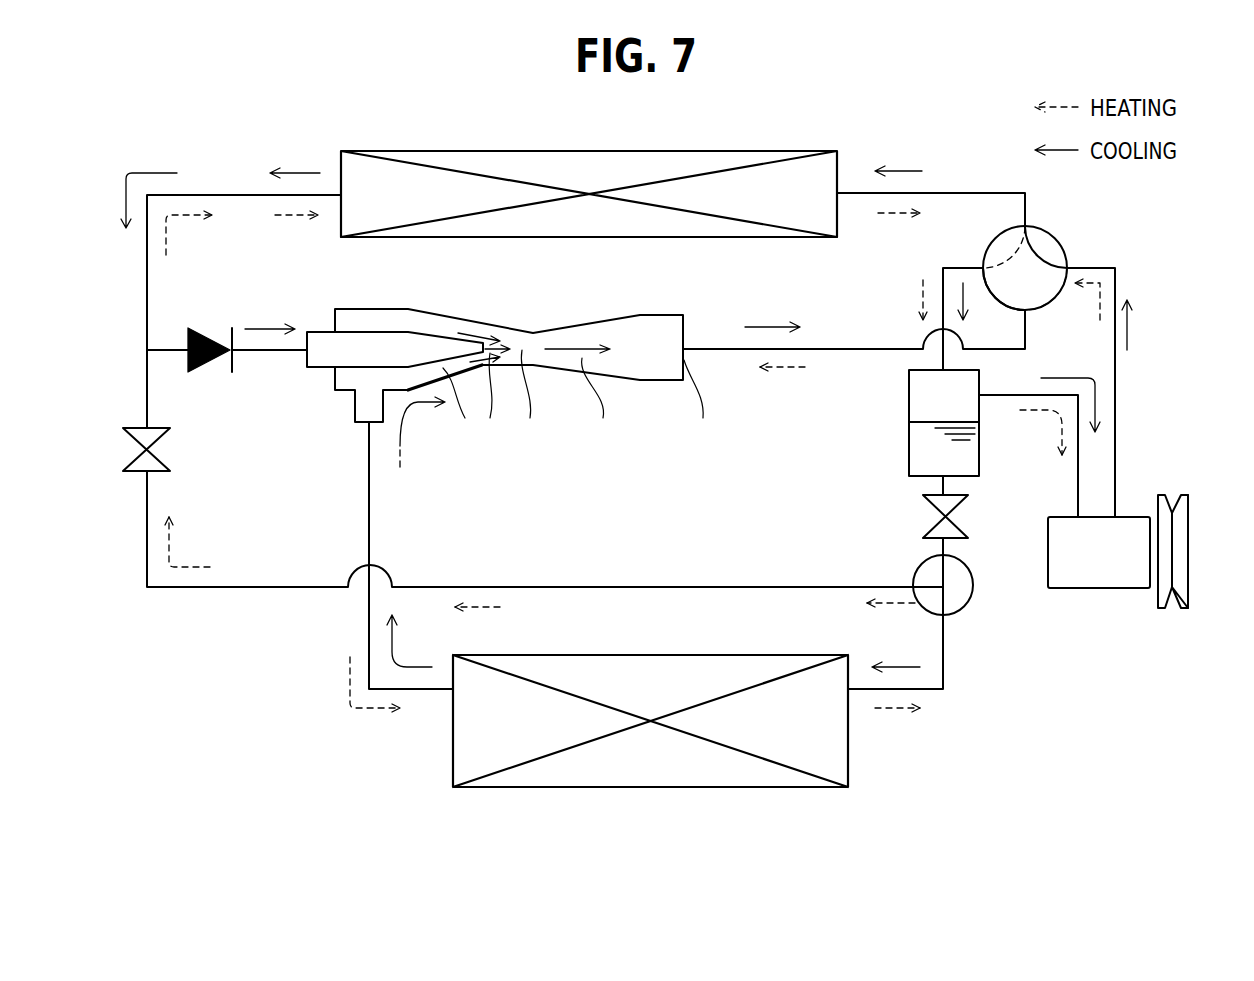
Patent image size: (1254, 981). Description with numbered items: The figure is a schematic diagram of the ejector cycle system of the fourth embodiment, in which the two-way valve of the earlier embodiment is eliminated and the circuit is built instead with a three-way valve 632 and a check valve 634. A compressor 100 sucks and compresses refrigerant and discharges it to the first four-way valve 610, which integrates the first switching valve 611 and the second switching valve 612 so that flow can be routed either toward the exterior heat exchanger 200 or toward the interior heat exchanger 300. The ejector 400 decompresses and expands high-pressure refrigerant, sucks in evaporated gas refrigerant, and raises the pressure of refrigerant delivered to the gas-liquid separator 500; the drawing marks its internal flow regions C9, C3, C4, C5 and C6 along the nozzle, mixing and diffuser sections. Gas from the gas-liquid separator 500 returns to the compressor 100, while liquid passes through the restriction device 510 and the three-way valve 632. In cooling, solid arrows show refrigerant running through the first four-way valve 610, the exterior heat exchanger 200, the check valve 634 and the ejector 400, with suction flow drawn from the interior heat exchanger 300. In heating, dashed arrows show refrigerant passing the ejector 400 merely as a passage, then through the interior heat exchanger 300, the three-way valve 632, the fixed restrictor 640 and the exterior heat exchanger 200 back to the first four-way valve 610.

The compressor 100 is at (1075, 590).
The exterior heat exchanger 200 is at (766, 148).
The interior heat exchanger 300 is at (790, 790).
The ejector 400 is at (583, 324).
The gas-liquid separator 500 is at (909, 450).
The restriction device 510 is at (925, 511).
The first four-way valve 610 is at (1094, 252).
The first switching valve 611 is at (1094, 264).
The second switching valve 612 is at (1060, 240).
The three-way valve 632 is at (918, 572).
The check valve 634 is at (205, 330).
The fixed restrictor 640 is at (168, 459).
The ejector suction passage C9 is at (457, 404).
The nozzle outlet passage C3 is at (492, 396).
The mixing portion C4 is at (523, 395).
The diffuser portion C5 is at (597, 399).
The ejector outlet C6 is at (697, 400).